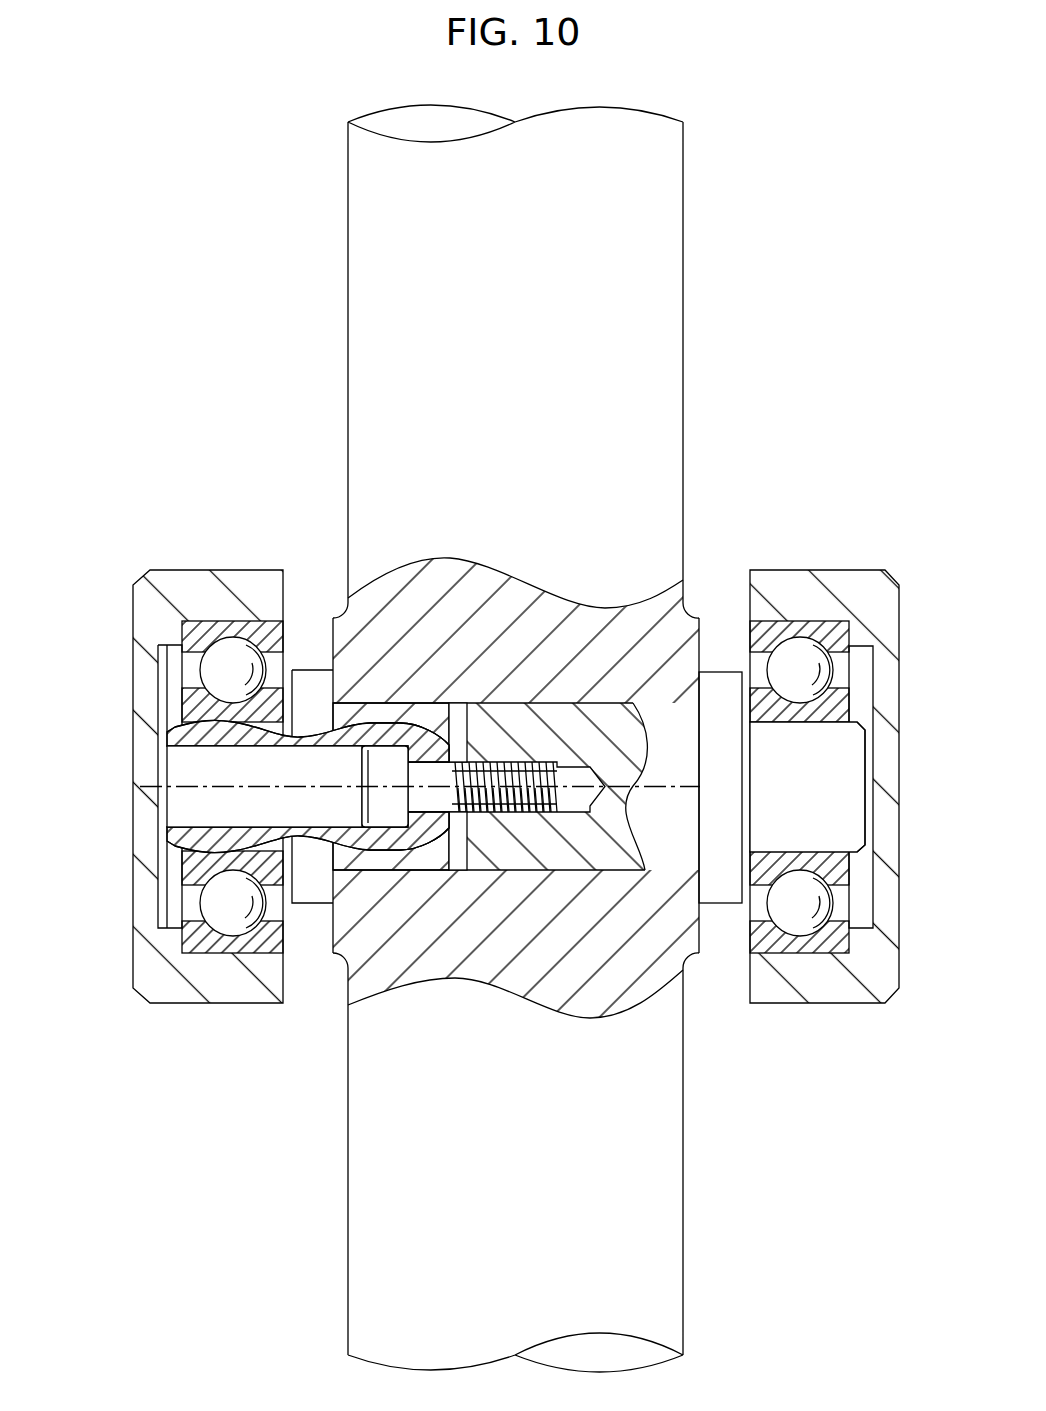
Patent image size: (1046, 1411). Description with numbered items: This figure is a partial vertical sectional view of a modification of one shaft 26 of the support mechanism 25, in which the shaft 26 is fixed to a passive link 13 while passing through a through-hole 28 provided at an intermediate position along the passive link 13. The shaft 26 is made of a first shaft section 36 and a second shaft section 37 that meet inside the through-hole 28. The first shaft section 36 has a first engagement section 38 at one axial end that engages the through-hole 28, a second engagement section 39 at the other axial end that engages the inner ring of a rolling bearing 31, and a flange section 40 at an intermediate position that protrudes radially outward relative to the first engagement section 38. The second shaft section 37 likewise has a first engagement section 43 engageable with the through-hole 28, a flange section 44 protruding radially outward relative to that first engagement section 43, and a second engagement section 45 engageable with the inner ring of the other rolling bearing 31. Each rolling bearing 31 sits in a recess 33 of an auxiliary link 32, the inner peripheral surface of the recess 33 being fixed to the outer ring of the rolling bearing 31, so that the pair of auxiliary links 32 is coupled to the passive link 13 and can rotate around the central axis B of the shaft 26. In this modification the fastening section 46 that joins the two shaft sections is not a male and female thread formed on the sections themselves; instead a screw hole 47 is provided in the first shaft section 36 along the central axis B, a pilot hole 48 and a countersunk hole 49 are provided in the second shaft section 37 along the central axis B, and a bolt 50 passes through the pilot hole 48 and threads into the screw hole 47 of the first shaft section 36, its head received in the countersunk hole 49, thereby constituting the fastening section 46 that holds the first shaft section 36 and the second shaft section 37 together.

The passive link 13 is at (345, 228).
The support mechanism 25 is at (98, 638).
The shaft 26 is at (718, 620).
The through-hole 28 is at (405, 868).
The rolling bearing 31 is at (221, 955).
The auxiliary link 32 is at (190, 550).
The recess 33 is at (158, 926).
The first shaft section 36 is at (887, 757).
The second shaft section 37 is at (140, 815).
The first engagement section 38 is at (548, 680).
The second engagement section 39 is at (838, 808).
The flange section 40 is at (718, 906).
The first engagement section 43 is at (405, 680).
The flange section 44 is at (308, 907).
The second engagement section 45 is at (180, 732).
The fastening section 46 is at (467, 1042).
The screw hole 47 is at (574, 812).
The pilot hole 48 is at (437, 814).
The countersunk hole 49 is at (360, 748).
The bolt 50 is at (485, 814).
The central axis B is at (663, 790).